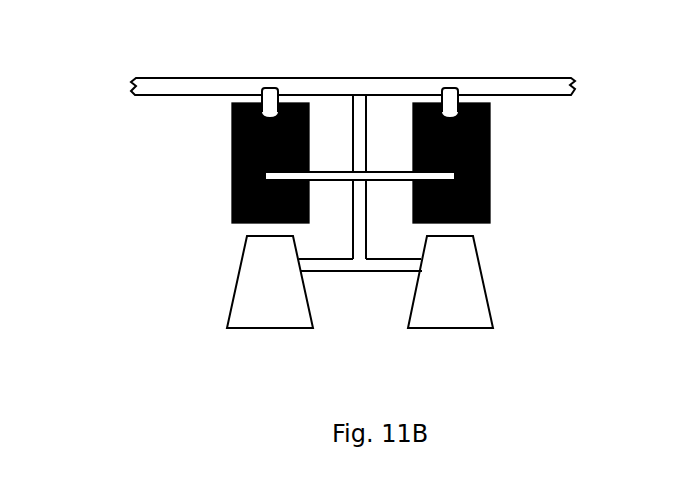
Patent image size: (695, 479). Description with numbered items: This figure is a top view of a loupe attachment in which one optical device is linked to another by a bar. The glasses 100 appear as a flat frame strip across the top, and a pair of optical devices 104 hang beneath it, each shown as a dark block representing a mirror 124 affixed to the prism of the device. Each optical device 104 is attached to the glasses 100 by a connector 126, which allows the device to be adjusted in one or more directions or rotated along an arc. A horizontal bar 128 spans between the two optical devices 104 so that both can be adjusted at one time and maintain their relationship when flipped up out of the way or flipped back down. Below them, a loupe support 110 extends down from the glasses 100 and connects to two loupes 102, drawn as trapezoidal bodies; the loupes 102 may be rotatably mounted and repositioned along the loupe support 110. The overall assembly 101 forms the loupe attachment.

The glasses 100 is at (175, 82).
The mounting device 101 is at (332, 198).
The loupe 102 is at (467, 300).
The optical device 104 is at (370, 198).
The loupe support 110 is at (328, 266).
The mirror 124 is at (493, 198).
The connector 126 is at (262, 100).
The bar 128 is at (378, 175).